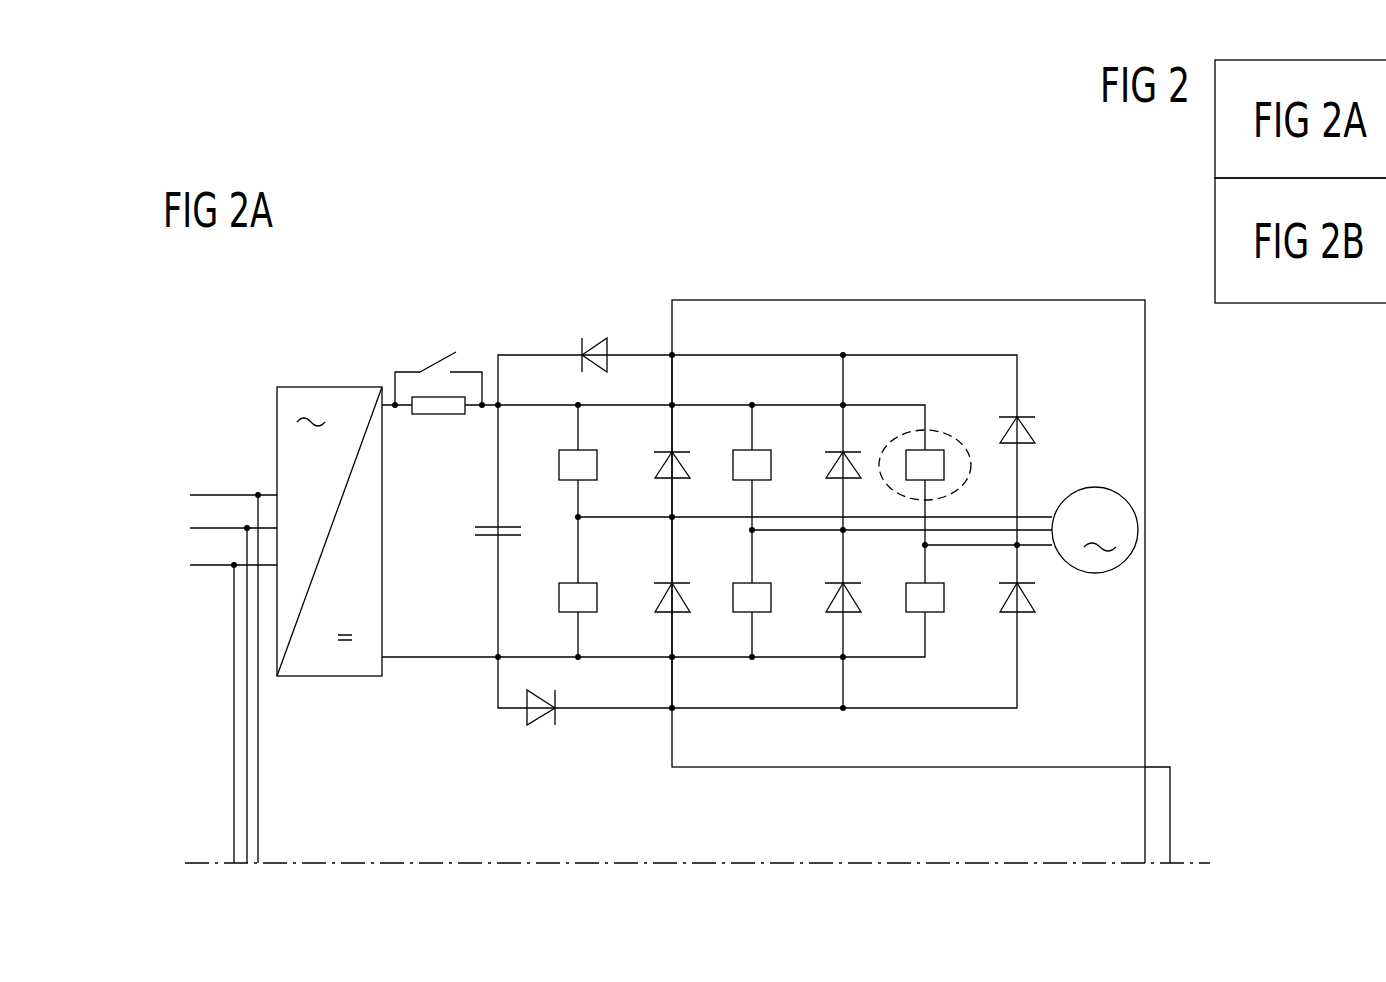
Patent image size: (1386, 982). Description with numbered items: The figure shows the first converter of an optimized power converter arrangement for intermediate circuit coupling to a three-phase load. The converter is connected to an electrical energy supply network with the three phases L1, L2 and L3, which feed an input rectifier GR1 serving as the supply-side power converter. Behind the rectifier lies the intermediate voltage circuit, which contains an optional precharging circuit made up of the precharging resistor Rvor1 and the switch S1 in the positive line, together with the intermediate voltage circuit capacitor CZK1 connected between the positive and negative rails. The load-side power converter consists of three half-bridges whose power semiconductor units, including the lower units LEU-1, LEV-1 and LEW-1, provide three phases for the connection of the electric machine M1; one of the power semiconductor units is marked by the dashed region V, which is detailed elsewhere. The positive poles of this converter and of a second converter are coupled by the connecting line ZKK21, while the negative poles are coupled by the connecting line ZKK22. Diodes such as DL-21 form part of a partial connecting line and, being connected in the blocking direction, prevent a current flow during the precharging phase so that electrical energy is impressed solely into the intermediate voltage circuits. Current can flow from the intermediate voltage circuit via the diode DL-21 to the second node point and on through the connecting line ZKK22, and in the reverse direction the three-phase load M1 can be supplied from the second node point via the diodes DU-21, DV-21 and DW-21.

The input rectifier GR1 is at (330, 387).
The phase L1 is at (220, 671).
The phase L2 is at (220, 687).
The phase L3 is at (220, 705).
The precharging resistor Rvor1 is at (438, 415).
The switch S1 is at (428, 370).
The intermediate voltage circuit capacitor CZK1 is at (484, 540).
The diode DL-21 is at (546, 726).
The power semiconductor unit LEU-1 is at (590, 612).
The power semiconductor unit LEV-1 is at (760, 612).
The power semiconductor unit LEW-1 is at (932, 612).
The diode DU-21 is at (676, 612).
The diode DV-21 is at (848, 612).
The diode DW-21 is at (1022, 612).
The detail region (inductor) V is at (972, 474).
The electric machine M1 is at (1091, 487).
The connecting line ZKK21 is at (898, 300).
The connecting line ZKK22 is at (901, 768).